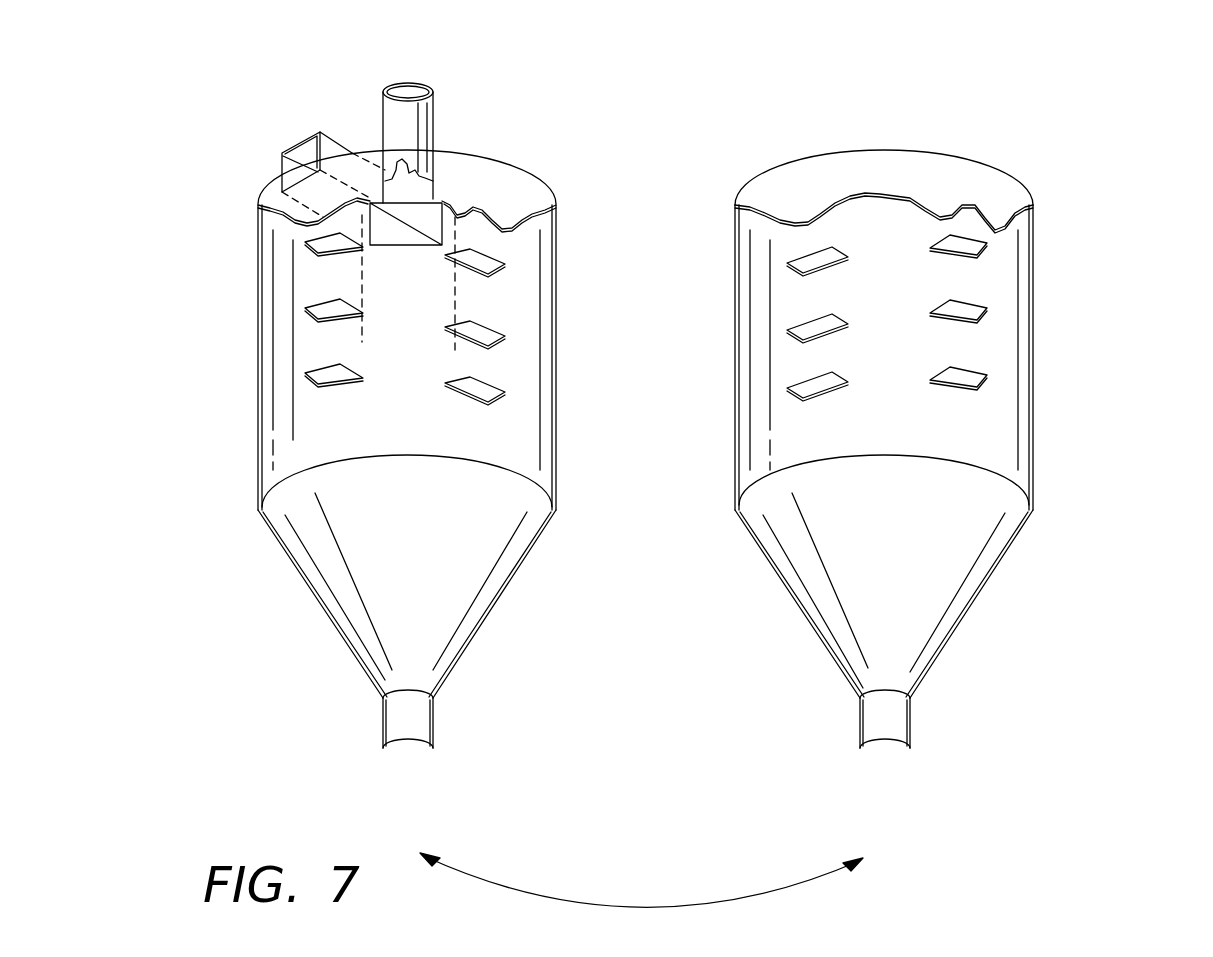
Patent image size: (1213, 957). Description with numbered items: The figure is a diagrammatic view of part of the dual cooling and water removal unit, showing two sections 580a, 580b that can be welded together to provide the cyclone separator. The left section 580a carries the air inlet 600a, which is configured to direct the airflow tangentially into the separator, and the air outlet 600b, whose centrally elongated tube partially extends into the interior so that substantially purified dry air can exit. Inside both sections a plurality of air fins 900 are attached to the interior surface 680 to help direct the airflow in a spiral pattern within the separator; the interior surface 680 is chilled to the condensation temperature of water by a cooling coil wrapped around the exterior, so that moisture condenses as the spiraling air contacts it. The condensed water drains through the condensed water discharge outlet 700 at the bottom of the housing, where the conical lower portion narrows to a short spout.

The section of the cyclone separator 580a is at (548, 182).
The section of the cyclone separator 580b is at (997, 168).
The air inlet 600a is at (300, 143).
The air outlet 600b is at (455, 97).
The interior surface 680 is at (980, 433).
The condensed water discharge outlet 700 is at (435, 723).
The air fins 900 is at (312, 303).